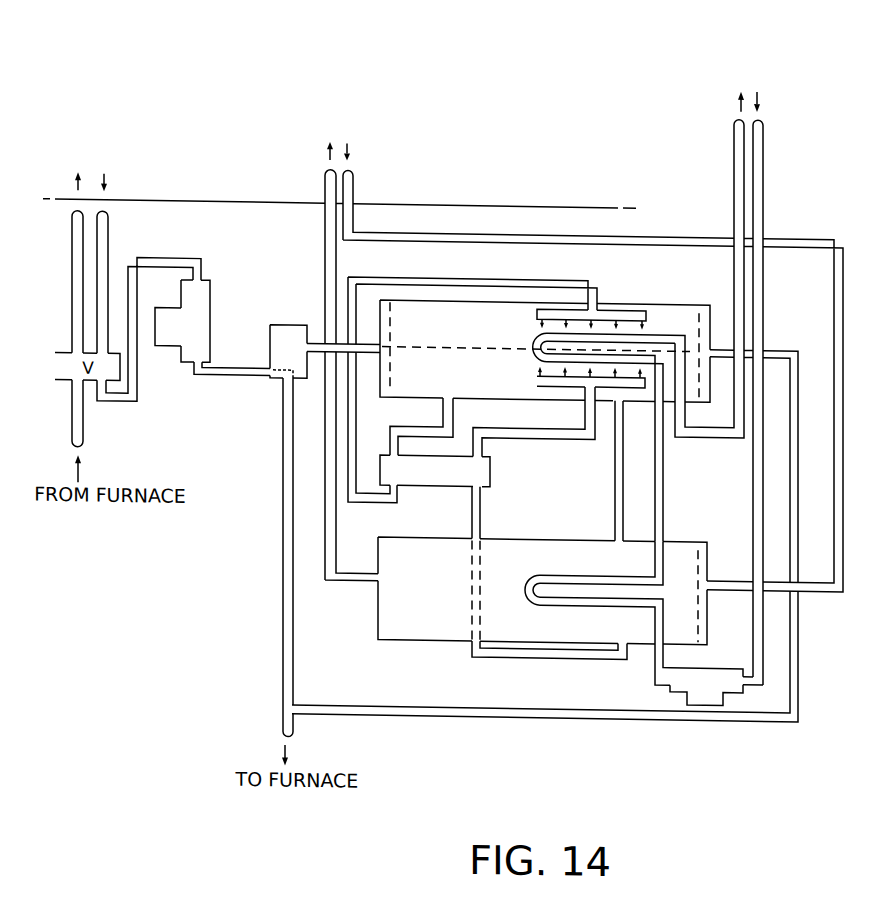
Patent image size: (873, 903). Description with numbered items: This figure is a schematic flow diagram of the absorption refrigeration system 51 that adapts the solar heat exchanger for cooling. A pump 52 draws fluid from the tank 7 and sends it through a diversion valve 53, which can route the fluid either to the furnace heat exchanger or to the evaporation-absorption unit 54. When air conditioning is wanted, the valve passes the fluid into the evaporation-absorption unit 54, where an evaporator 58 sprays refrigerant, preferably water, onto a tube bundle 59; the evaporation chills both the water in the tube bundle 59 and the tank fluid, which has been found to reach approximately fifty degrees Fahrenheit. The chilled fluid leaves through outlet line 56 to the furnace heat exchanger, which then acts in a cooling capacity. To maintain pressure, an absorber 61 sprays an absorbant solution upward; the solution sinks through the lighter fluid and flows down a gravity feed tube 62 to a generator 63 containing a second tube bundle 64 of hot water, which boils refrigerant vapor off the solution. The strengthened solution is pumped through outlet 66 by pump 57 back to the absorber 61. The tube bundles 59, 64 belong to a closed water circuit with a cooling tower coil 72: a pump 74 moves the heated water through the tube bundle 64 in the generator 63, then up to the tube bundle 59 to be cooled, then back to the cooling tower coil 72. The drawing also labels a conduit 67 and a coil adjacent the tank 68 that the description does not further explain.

The tank 7 is at (100, 147).
The absorption refrigeration system 51 is at (539, 182).
The pump 52 is at (205, 287).
The diversion valve 53 is at (283, 320).
The evaporation-absorption unit 54 is at (672, 280).
The outlet line 56 is at (783, 338).
The pump 57 is at (418, 479).
The evaporator 58 is at (612, 300).
The tube bundle 59 is at (532, 334).
The absorber 61 is at (537, 376).
The gravity feed tube 62 is at (615, 462).
The generator 63 is at (517, 531).
The second tube bundle 64 is at (528, 592).
The outlet 66 is at (622, 647).
The conduit 67 is at (348, 568).
The coil adjacent tank 68 is at (349, 125).
The cooling tower coil 72 is at (748, 63).
The pump 74 is at (670, 673).